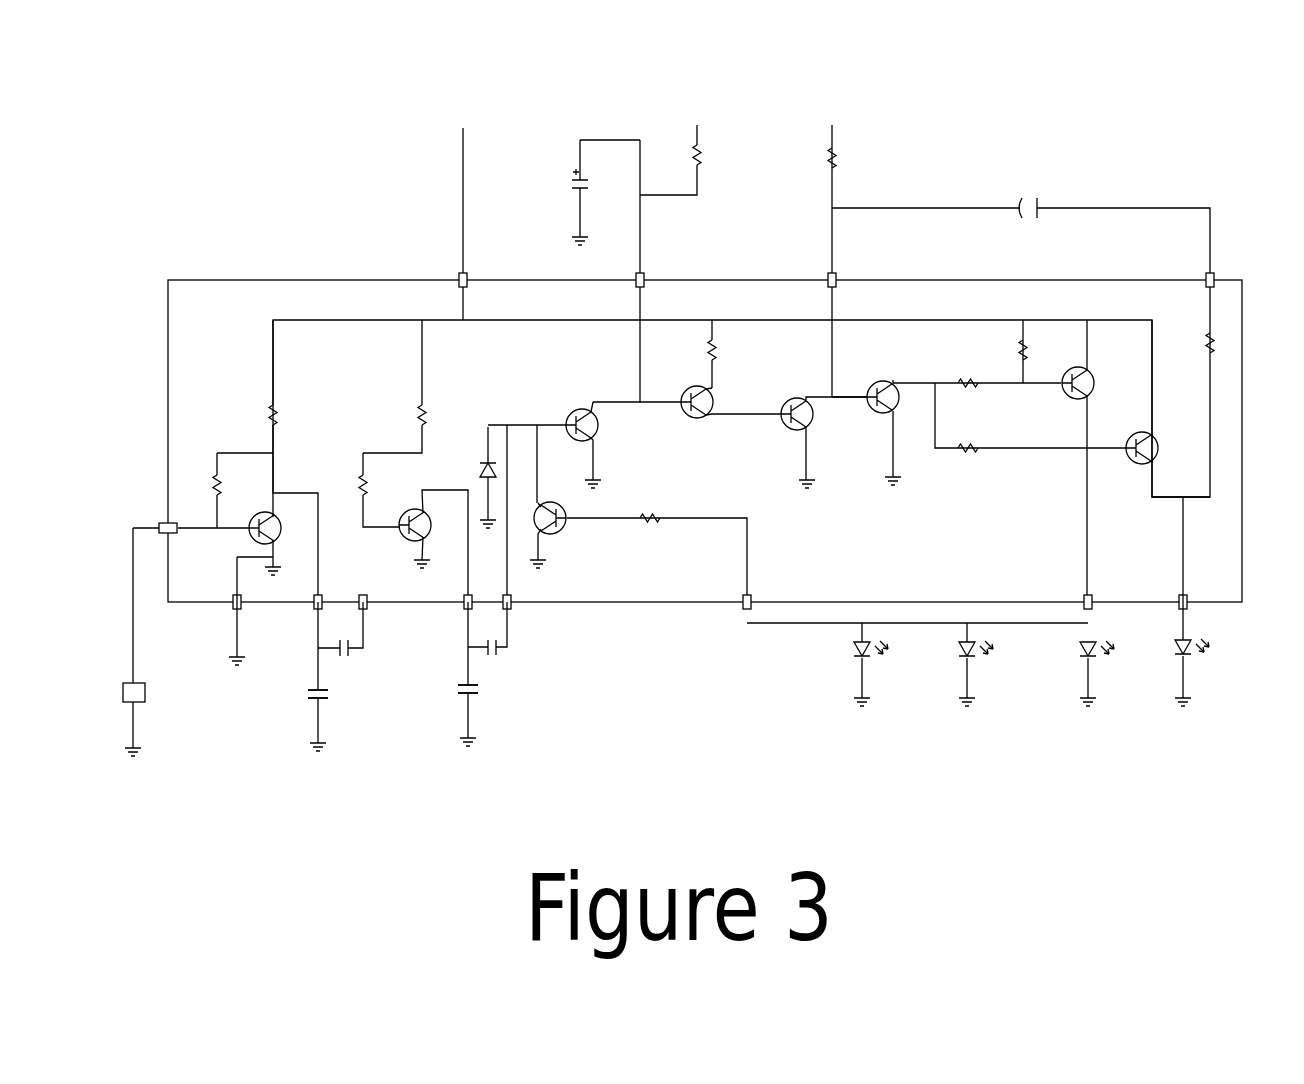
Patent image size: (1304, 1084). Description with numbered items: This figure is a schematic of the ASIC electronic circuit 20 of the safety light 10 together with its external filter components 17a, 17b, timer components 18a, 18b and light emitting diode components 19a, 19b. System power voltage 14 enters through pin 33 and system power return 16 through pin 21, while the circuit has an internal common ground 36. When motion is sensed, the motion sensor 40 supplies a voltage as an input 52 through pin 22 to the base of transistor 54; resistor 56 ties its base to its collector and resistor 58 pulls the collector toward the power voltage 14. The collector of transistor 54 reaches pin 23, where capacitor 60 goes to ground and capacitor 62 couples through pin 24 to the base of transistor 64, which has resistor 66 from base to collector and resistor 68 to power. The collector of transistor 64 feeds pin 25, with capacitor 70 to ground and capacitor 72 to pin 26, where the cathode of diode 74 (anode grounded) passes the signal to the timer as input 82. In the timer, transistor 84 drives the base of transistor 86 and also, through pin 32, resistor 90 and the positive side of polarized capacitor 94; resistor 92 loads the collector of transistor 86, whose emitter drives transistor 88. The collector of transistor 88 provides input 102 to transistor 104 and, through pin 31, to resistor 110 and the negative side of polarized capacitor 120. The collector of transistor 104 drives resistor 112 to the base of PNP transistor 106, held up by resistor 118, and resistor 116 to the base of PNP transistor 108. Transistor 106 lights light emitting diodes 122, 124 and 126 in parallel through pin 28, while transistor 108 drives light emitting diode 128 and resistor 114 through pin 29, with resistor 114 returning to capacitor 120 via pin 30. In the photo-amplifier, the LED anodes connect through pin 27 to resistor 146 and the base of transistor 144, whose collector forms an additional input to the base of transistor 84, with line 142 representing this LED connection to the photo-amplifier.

The safety light 10 is at (1198, 156).
The system power voltage 14 is at (457, 130).
The system power return 16 is at (578, 242).
The filter components 17a is at (410, 828).
The filter components 17b is at (590, 828).
The timer components 18a is at (548, 138).
The timer components 18b is at (951, 136).
The light emitting diode components 19a is at (918, 833).
The light emitting diode components 19b is at (1128, 833).
The ASIC electronic circuit 20 is at (168, 300).
The pin 21 is at (245, 612).
The pin 22 is at (160, 526).
The pin 23 is at (235, 610).
The pin 24 is at (365, 610).
The pin 25 is at (465, 612).
The pin 26 is at (515, 608).
The pin 27 is at (745, 607).
The pin 28 is at (1082, 598).
The pin 29 is at (1192, 605).
The pin 30 is at (1207, 276).
The pin 31 is at (838, 278).
The pin 32 is at (646, 278).
The pin 33 is at (461, 276).
The common ground 36 is at (300, 560).
The motion sensor 40 is at (140, 684).
The input 52 is at (133, 535).
The transistor 54 is at (264, 512).
The resistor 56 is at (212, 470).
The resistor 58 is at (282, 412).
The capacitor 60 is at (312, 694).
The capacitor 62 is at (342, 660).
The transistor 64 is at (410, 512).
The resistor 66 is at (358, 476).
The resistor 68 is at (428, 412).
The capacitor 70 is at (462, 690).
The capacitor 72 is at (498, 660).
The diode 74 is at (483, 466).
The input 82 is at (516, 422).
The transistor 84 is at (588, 410).
The transistor 86 is at (710, 390).
The transistor 88 is at (796, 397).
The resistor 90 is at (704, 159).
The resistor 92 is at (707, 348).
The polarized capacitor 94 is at (573, 187).
The input 102 is at (832, 406).
The transistor 104 is at (880, 384).
The PNP transistor 106 is at (1068, 392).
The PNP transistor 108 is at (1134, 462).
The resistor 110 is at (838, 160).
The resistor 112 is at (978, 350).
The resistor 114 is at (1205, 348).
The resistor 116 is at (976, 450).
The resistor 118 is at (1028, 345).
The polarized capacitor 120 is at (1025, 206).
The light emitting diode 122 is at (852, 650).
The light emitting diode 124 is at (960, 651).
The light emitting diode 126 is at (1080, 651).
The light emitting diode 128 is at (1175, 644).
The line 142 is at (788, 625).
The transistor 144 is at (572, 530).
The resistor 146 is at (680, 495).